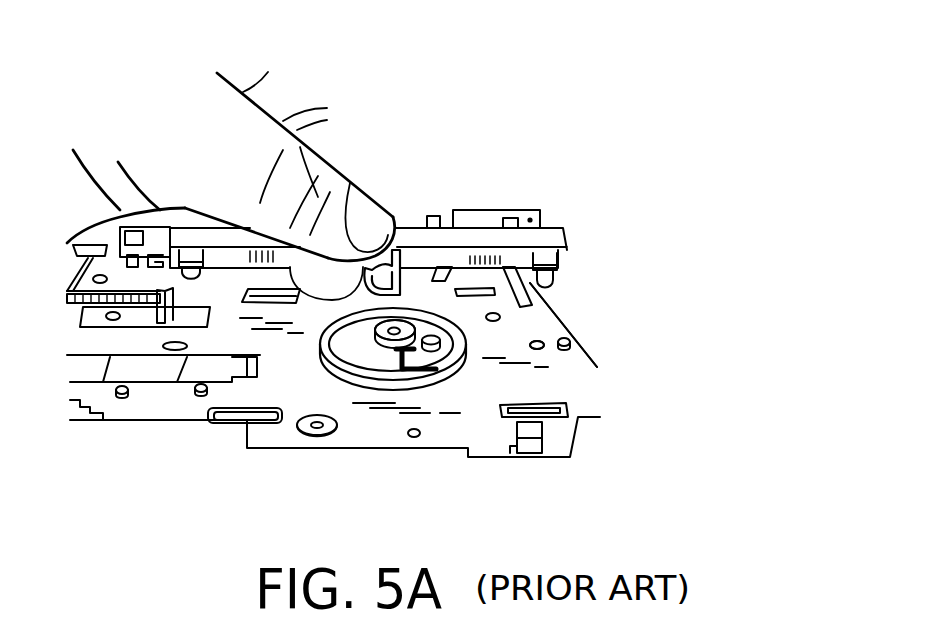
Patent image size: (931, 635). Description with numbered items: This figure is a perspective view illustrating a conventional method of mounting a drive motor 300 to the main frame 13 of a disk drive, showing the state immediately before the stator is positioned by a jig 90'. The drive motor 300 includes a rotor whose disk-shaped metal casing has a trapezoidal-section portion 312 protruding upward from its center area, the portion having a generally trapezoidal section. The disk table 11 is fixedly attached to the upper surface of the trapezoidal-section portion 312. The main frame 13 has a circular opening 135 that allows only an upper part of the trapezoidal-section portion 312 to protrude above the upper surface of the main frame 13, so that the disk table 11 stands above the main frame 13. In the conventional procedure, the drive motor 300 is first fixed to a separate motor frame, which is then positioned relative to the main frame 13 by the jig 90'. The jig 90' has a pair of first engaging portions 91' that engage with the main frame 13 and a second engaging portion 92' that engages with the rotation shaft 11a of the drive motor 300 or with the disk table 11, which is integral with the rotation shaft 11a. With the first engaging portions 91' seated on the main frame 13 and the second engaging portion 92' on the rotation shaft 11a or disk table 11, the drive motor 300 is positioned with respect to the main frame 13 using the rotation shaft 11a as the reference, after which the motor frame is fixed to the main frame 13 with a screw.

The disk table 11 is at (352, 340).
The rotation shaft 11a is at (397, 324).
The main frame 13 is at (368, 422).
The jig 90' is at (372, 140).
The first engaging portions 91' is at (403, 150).
The second engaging portion 92' is at (362, 154).
The circular opening 135 is at (470, 342).
The drive motor 300 is at (429, 295).
The trapezoidal-section portion 312 is at (445, 378).